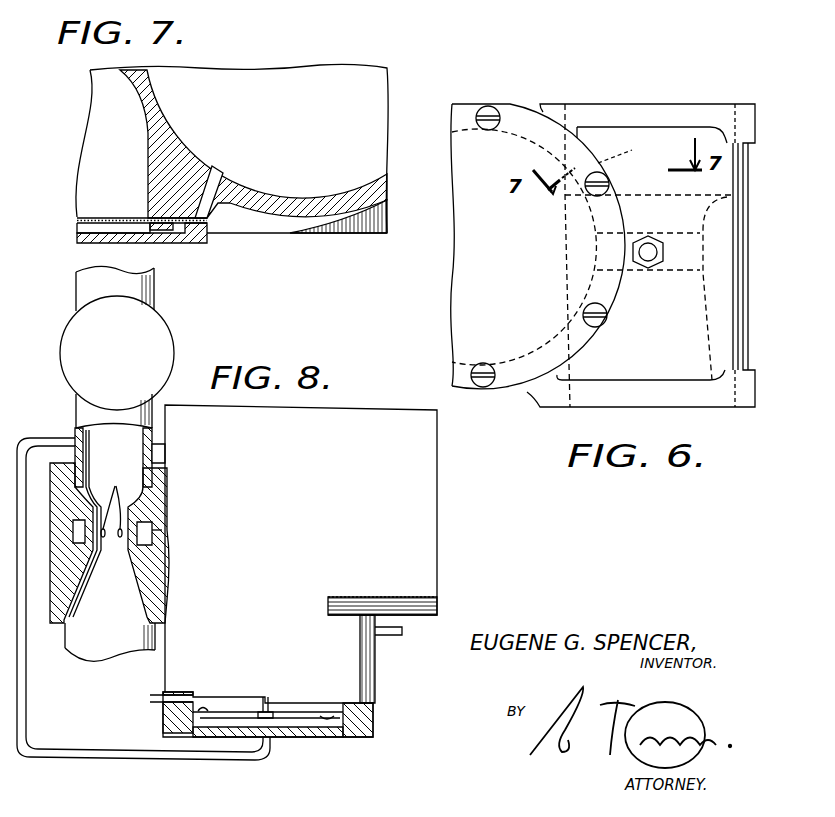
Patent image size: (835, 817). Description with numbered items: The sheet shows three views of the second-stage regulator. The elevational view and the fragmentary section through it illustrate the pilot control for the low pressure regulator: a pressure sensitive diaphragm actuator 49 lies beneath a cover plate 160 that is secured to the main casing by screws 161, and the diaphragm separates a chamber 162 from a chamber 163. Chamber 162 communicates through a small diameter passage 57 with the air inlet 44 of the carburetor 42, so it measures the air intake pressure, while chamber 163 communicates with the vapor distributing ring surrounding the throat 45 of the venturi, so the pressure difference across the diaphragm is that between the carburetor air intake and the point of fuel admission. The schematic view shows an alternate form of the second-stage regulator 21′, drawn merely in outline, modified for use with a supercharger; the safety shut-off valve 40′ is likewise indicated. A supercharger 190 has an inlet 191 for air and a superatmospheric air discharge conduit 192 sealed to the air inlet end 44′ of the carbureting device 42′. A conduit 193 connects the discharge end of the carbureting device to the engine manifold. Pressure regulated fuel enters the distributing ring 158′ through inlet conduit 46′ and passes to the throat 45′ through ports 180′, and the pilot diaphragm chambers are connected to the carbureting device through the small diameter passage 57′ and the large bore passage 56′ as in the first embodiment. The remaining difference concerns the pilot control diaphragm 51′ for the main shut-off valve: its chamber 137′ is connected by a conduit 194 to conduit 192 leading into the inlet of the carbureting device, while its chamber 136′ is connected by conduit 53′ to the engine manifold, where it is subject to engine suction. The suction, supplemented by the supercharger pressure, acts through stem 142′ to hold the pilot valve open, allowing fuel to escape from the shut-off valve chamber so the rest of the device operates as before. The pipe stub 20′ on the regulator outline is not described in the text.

In FIG. 7, the chamber 163 is at (95, 153).
In FIG. 7, the small diameter passage 57 is at (213, 167).
In FIG. 6, the small diameter passage 57 is at (628, 151).
In FIG. 7, the chamber 162 is at (77, 220).
In FIG. 7, the pressure sensitive diaphragm actuator 49 is at (102, 218).
In FIG. 7, the cover plate 160 is at (77, 238).
In FIG. 6, the cover plate 160 is at (530, 302).
In FIG. 6, the screws 161 is at (488, 106).
In FIG. 6, the air inlet 44 is at (740, 183).
In FIG. 6, the throat 45 is at (700, 253).
In FIG. 6, the carburetor 42 is at (752, 321).
In FIG. 8, the inlet 191 is at (154, 290).
In FIG. 8, the supercharger 190 is at (165, 329).
In FIG. 8, the air discharge conduit 192 is at (85, 408).
In FIG. 8, the air inlet end 44′ is at (152, 444).
In FIG. 8, the small diameter passage 57′ is at (166, 478).
In FIG. 8, the carbureting device 42′ is at (178, 572).
In FIG. 8, the ports 180′ is at (115, 498).
In FIG. 8, the throat 45′ is at (110, 547).
In FIG. 8, the large bore passage 56′ is at (150, 514).
In FIG. 8, the distributing ring 158′ is at (152, 537).
In FIG. 8, the inlet conduit 46′ is at (162, 530).
In FIG. 8, the conduit 193 is at (70, 648).
In FIG. 8, the conduit 194 is at (237, 763).
In FIG. 8, the second-stage regulator 21′ is at (437, 556).
In FIG. 8, the pipe 20′ is at (390, 636).
In FIG. 8, the safety shut-off valve 40′ is at (385, 718).
In FIG. 8, the conduit 53′ is at (152, 700).
In FIG. 8, the chamber 136′ is at (217, 703).
In FIG. 8, the stem 142′ is at (266, 697).
In FIG. 8, the chamber 137′ is at (200, 730).
In FIG. 8, the pilot control diaphragm 51′ is at (313, 722).